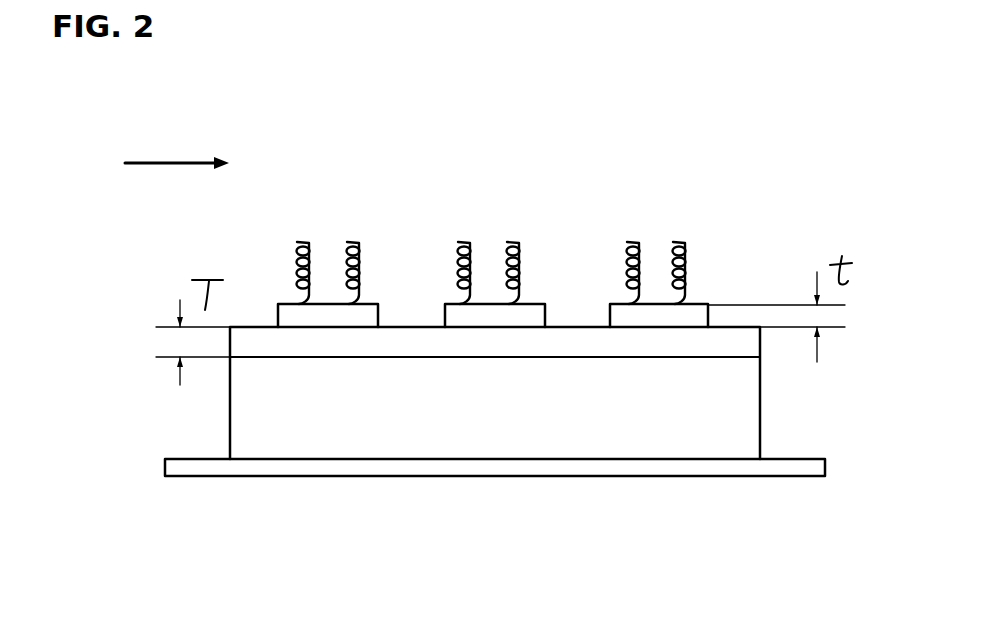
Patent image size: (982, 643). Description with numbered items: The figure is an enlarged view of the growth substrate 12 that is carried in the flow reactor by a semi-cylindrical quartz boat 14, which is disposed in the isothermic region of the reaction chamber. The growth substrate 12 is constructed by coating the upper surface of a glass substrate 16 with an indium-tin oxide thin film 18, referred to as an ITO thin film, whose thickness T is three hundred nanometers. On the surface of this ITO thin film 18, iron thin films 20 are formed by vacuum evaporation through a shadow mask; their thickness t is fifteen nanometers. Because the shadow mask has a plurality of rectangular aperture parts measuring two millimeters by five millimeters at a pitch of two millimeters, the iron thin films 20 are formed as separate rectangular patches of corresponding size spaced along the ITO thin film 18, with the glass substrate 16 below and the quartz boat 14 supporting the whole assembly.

The growth substrate 12 is at (773, 204).
The quartz boat 14 is at (777, 467).
The glass substrate 16 is at (735, 409).
The indium-tin oxide thin film 18 is at (593, 345).
The iron thin films 20 is at (490, 316).